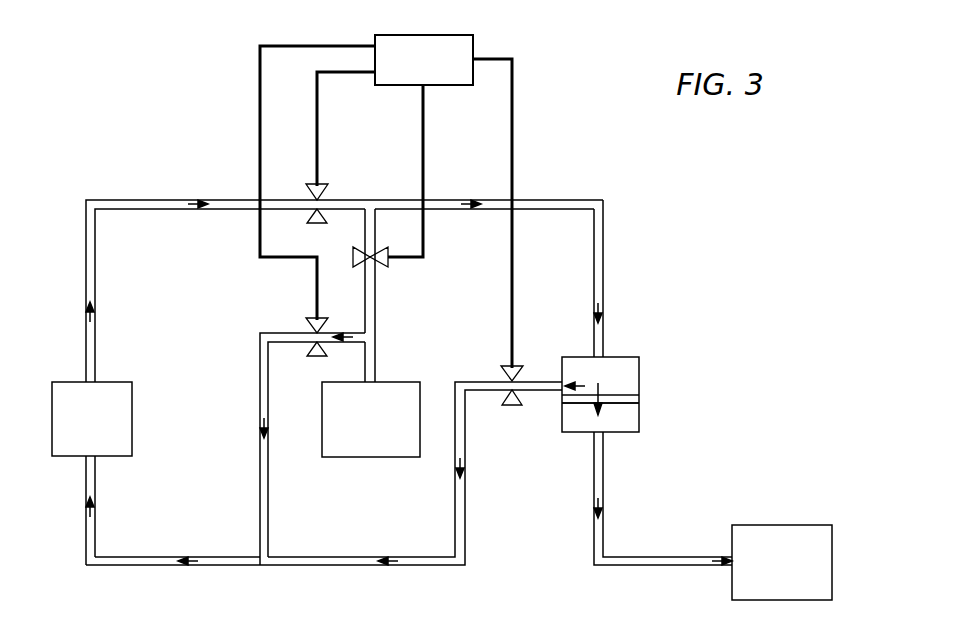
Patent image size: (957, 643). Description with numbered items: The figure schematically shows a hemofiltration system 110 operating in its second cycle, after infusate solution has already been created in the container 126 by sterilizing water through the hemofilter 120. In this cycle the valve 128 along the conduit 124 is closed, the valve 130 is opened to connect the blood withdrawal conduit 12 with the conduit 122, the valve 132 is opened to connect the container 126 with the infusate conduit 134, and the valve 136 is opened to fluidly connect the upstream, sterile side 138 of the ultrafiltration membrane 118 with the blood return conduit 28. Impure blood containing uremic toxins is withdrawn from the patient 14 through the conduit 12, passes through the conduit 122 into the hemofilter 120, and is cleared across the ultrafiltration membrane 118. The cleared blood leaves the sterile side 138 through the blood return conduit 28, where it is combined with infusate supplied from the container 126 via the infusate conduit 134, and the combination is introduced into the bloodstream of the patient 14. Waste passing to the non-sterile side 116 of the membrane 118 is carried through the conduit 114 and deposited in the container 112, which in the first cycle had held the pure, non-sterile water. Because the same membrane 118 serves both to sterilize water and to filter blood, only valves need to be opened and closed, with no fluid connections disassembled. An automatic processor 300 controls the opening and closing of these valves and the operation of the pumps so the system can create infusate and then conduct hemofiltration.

The system 110 is at (134, 66).
The automatic processor 300 is at (386, 201).
The blood withdrawal conduit 12 is at (232, 200).
The patient 14 is at (92, 419).
The blood return conduit 28 is at (200, 557).
The conduit 122 is at (473, 200).
The valve 130 is at (325, 186).
The conduit 124 is at (364, 226).
The valve 128 is at (376, 263).
The valve 132 is at (310, 320).
The container 126 is at (371, 419).
The infusate conduit 134 is at (262, 430).
The valve 136 is at (505, 370).
The hemofilter 120 is at (627, 357).
The sterile side 138 is at (624, 395).
The ultrafiltration membrane 118 is at (635, 399).
The non-sterile side 116 is at (632, 405).
The conduit 114 is at (605, 512).
The container 112 is at (782, 562).